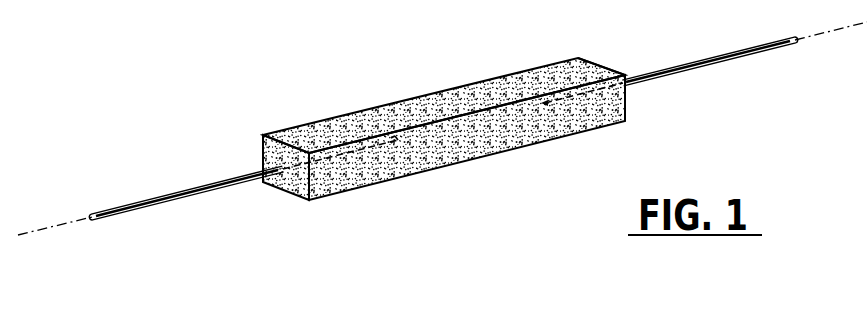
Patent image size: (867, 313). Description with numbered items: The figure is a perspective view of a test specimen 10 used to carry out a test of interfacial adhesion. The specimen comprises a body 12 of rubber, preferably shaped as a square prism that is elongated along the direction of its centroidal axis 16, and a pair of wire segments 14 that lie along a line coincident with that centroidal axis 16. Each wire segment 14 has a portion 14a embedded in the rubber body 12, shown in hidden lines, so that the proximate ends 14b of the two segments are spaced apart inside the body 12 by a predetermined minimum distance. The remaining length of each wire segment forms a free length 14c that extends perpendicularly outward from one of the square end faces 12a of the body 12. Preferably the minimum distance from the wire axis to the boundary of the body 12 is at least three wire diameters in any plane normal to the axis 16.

The test specimen 10 is at (321, 105).
The body 12 is at (417, 102).
The square end faces 12a is at (264, 150).
The wire segments 14 is at (182, 191).
The embedded portion 14a is at (367, 143).
The proximate ends 14b is at (398, 144).
The free length 14c is at (280, 208).
The centroidal axis 16 is at (67, 223).